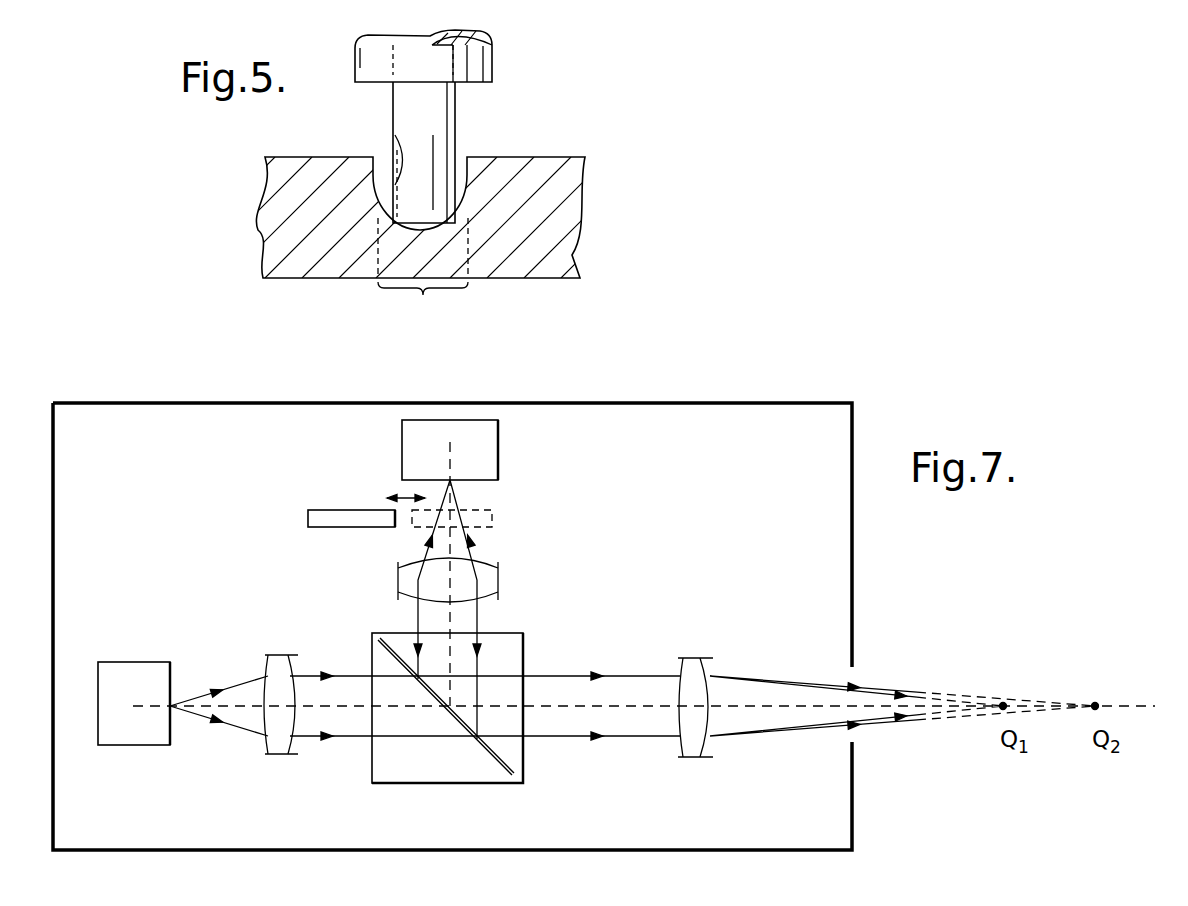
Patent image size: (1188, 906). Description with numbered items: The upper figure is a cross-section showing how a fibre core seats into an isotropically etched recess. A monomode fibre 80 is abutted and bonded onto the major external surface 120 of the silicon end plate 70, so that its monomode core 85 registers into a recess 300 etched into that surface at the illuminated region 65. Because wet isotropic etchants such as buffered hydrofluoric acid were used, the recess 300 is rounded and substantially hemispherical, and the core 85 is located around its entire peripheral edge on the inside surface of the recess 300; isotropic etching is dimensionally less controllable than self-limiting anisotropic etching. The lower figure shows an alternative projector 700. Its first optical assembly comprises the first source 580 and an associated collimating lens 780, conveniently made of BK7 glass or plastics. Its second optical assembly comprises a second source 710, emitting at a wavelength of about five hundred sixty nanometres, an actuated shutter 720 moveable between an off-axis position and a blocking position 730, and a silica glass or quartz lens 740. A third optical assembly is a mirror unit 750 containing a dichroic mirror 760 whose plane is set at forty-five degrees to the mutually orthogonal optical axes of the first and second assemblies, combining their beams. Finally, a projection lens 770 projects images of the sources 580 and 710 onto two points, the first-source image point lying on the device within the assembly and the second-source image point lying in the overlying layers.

In FIG. 5, the region 65 is at (432, 272).
In FIG. 5, the silicon end plate 70 is at (567, 208).
In FIG. 5, the monomode fibre 80 is at (493, 53).
In FIG. 5, the monomode core 85 is at (443, 127).
In FIG. 5, the major external surface 120 is at (549, 152).
In FIG. 5, the recess 300 is at (378, 182).
In FIG. 7, the first source 580 is at (135, 668).
In FIG. 7, the projector 700 is at (817, 380).
In FIG. 7, the second source 710 is at (499, 445).
In FIG. 7, the actuated shutter 720 is at (340, 527).
In FIG. 7, the blocking position 730 is at (505, 508).
In FIG. 7, the lens 740 is at (492, 582).
In FIG. 7, the mirror unit 750 is at (435, 783).
In FIG. 7, the dichroic mirror 760 is at (493, 765).
In FIG. 7, the projection lens 770 is at (693, 755).
In FIG. 7, the collimating lens 780 is at (280, 748).